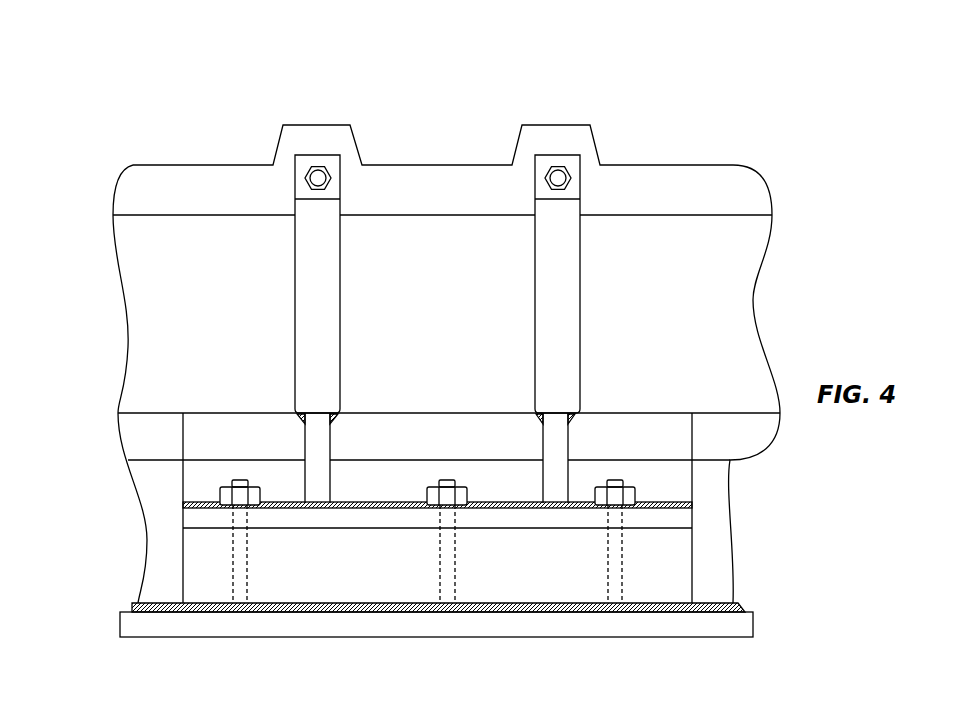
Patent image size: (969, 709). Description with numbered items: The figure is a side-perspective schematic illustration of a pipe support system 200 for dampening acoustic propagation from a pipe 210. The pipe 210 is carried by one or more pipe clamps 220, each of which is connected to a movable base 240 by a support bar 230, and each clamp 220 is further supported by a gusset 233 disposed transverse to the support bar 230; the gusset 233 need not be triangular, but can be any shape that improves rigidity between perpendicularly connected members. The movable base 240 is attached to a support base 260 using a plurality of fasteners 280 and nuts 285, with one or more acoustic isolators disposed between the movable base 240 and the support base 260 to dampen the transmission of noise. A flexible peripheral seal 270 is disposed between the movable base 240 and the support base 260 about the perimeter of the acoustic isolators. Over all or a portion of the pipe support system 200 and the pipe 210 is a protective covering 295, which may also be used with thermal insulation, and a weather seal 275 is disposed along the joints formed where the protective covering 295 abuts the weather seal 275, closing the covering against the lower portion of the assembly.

The pipe support system 200 is at (133, 58).
The protective covering 295 is at (147, 164).
The pipe 210 is at (135, 213).
The pipe clamp 220 is at (313, 268).
The support bar 230 is at (435, 425).
The gusset 233 is at (318, 472).
The movable base 240 is at (193, 520).
The flexible peripheral seal 270 is at (193, 567).
The weather seal 275 is at (132, 606).
The support base 260 is at (135, 628).
The fastener 280 is at (243, 480).
The nut 285 is at (226, 480).